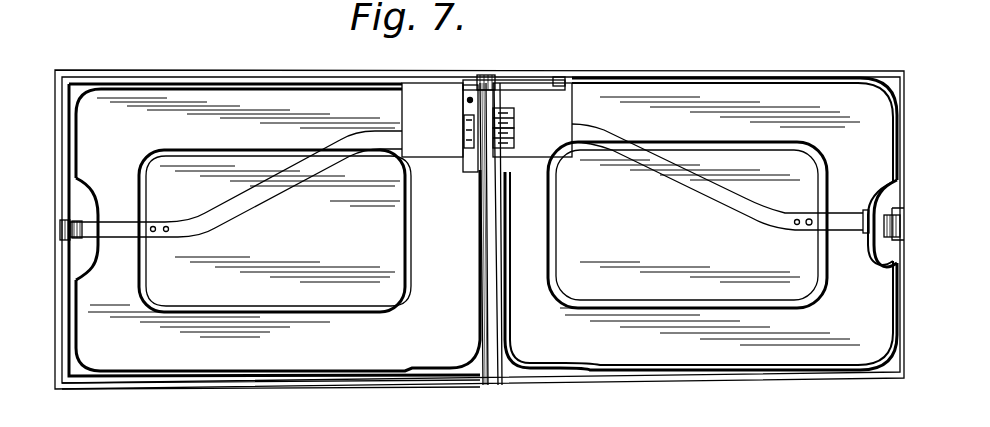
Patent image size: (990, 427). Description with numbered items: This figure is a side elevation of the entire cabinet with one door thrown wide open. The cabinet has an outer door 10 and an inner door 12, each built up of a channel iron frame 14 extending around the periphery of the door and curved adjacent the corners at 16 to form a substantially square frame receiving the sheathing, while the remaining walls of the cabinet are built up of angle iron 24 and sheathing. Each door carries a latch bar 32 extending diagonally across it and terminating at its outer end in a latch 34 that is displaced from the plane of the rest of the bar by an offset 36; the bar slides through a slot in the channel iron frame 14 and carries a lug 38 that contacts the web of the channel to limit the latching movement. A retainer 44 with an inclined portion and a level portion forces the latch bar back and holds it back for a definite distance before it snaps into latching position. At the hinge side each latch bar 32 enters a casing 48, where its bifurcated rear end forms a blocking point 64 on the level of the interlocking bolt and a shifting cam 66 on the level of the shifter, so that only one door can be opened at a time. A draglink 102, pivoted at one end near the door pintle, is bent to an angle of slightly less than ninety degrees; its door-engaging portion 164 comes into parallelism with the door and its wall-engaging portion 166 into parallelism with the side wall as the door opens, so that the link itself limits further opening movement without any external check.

The outer door 10 is at (708, 70).
The inner door 12 is at (258, 70).
The channel iron frame 14 is at (146, 372).
The curved corners 16 is at (898, 96).
The angle iron 24 is at (184, 384).
The latch bar 32 is at (700, 190).
The latch 34 is at (905, 225).
The offset 36 is at (262, 198).
The lug 38 is at (98, 222).
The retainer 44 is at (60, 230).
The casing 48 is at (565, 96).
The blocking point 64 is at (514, 140).
The shifting cam 66 is at (514, 124).
The draglink 102 is at (497, 80).
The door-engaging portion 164 is at (470, 85).
The wall-engaging portion 166 is at (548, 80).